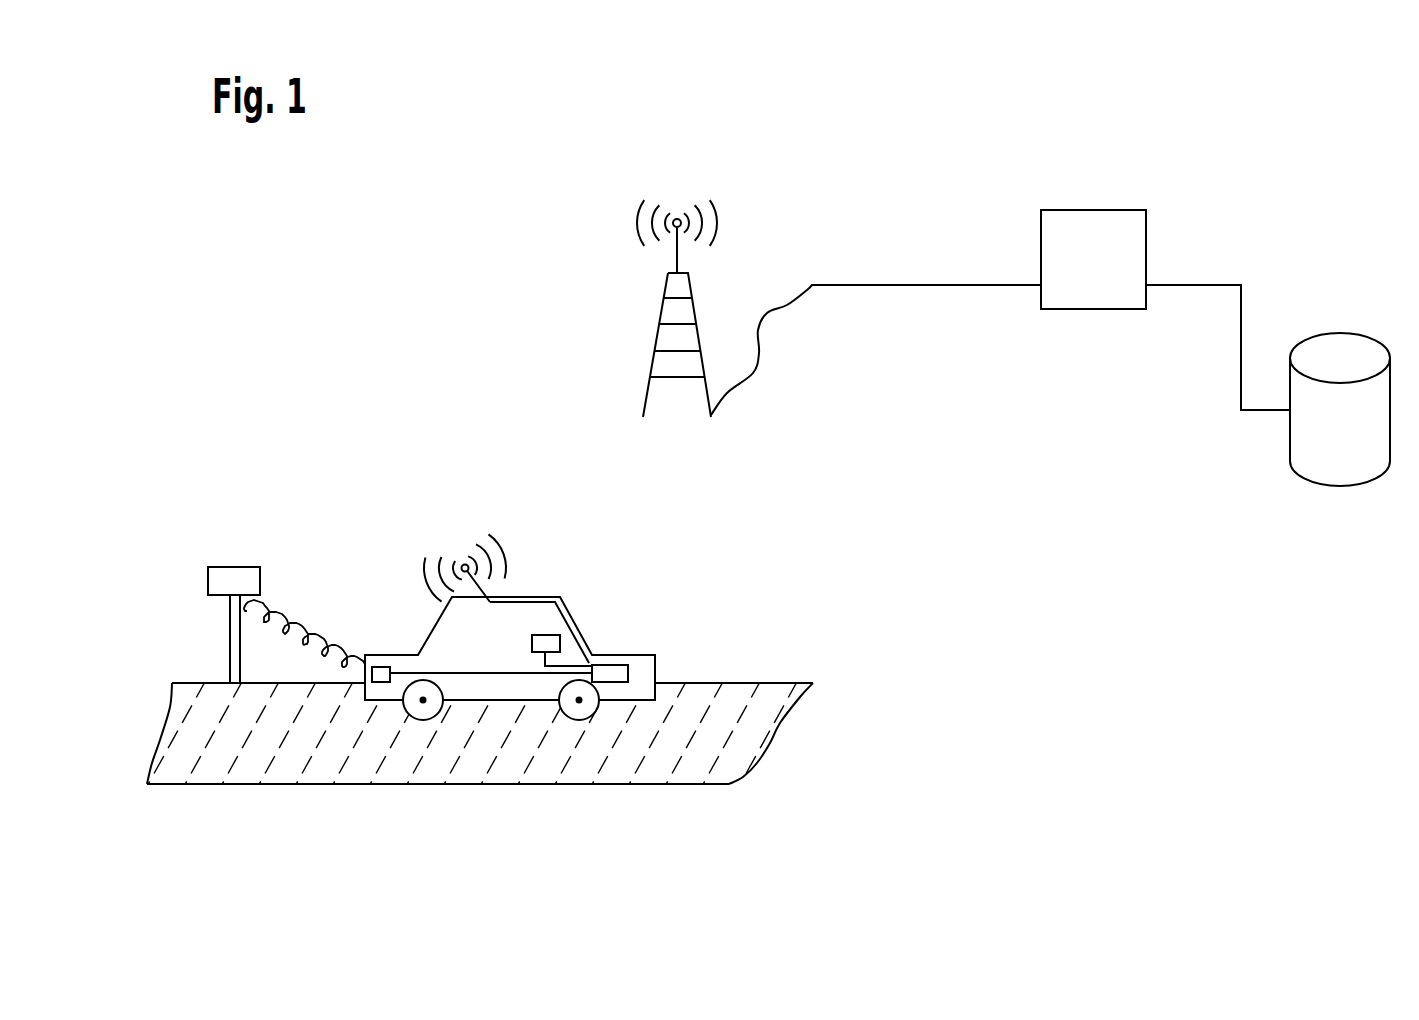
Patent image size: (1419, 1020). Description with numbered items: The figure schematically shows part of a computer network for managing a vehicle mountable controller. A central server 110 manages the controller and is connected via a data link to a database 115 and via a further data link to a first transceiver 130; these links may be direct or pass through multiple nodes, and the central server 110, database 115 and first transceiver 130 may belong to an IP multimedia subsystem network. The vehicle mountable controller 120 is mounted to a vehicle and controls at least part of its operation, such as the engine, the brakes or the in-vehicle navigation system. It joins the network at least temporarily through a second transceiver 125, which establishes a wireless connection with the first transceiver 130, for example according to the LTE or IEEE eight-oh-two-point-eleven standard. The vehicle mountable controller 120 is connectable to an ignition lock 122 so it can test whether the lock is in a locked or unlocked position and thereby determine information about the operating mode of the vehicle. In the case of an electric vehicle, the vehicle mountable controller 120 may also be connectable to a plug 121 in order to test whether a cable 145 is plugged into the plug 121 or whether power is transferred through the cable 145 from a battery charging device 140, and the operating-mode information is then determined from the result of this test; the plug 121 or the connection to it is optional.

The central server 110 is at (1092, 209).
The database 115 is at (1339, 488).
The vehicle mountable controller 120 is at (610, 663).
The plug 121 is at (375, 666).
The ignition lock 122 is at (553, 632).
The second transceiver 125 is at (483, 590).
The first transceiver 130 is at (677, 250).
The battery charging device 140 is at (237, 566).
The cable 145 is at (303, 630).